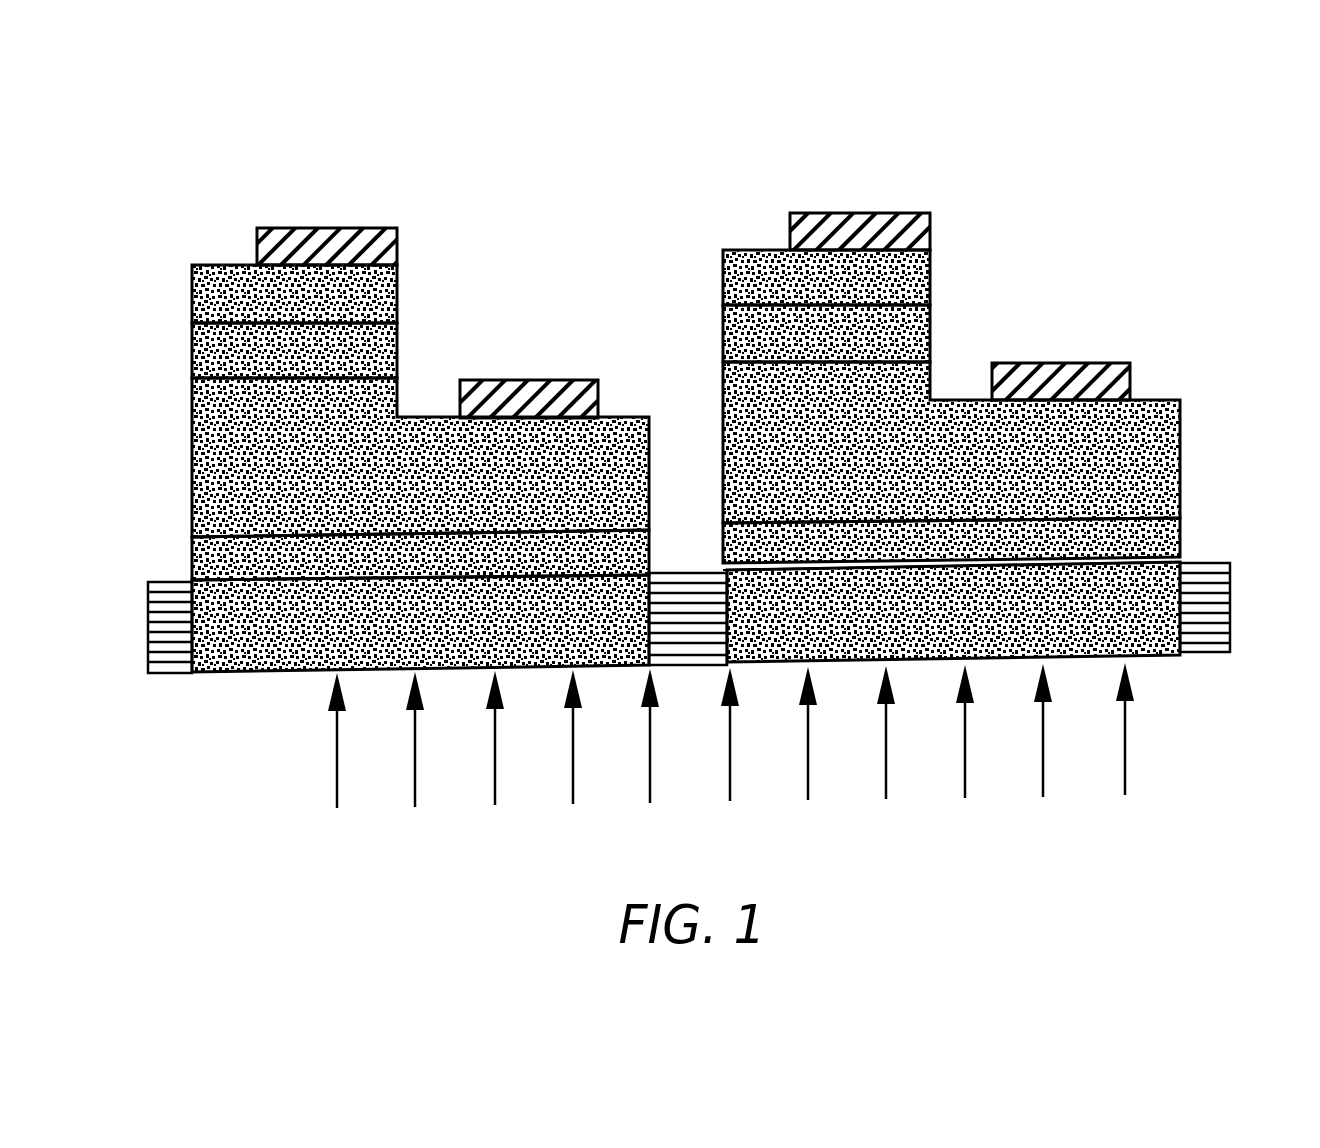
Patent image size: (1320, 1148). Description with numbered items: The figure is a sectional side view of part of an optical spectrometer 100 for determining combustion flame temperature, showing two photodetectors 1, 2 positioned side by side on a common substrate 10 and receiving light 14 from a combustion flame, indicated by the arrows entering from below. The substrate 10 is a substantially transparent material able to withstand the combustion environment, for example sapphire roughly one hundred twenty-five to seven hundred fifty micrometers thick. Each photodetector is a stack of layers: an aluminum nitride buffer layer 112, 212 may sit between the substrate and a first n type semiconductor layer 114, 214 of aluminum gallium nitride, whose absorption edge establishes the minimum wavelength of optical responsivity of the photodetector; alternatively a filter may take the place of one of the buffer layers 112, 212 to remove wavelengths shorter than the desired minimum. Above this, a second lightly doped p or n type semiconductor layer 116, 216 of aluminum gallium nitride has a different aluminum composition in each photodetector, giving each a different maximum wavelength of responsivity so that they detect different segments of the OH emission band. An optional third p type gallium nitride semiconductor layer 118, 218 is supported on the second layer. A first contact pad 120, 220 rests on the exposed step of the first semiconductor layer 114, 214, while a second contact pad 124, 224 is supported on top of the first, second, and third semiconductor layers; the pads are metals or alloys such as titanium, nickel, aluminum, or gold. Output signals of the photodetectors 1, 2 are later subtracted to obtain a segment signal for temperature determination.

The optical spectrometer 100 is at (262, 190).
The photodetector 1 is at (527, 237).
The photodetector 2 is at (1078, 242).
The substrate 10 is at (689, 617).
The light 14 is at (1125, 725).
The buffer layer 112 is at (420, 555).
The first n type semiconductor layer 114 is at (420, 457).
The second lightly doped semiconductor layer 116 is at (294, 350).
The third p type semiconductor layer 118 is at (294, 294).
The first contact pad 120 is at (535, 380).
The second contact pad 124 is at (350, 228).
The buffer layer 212 is at (951, 544).
The first n type semiconductor layer 214 is at (951, 442).
The second lightly doped semiconductor layer 216 is at (826, 333).
The third p type semiconductor layer 218 is at (826, 277).
The first contact pad 220 is at (1112, 363).
The second contact pad 224 is at (912, 210).